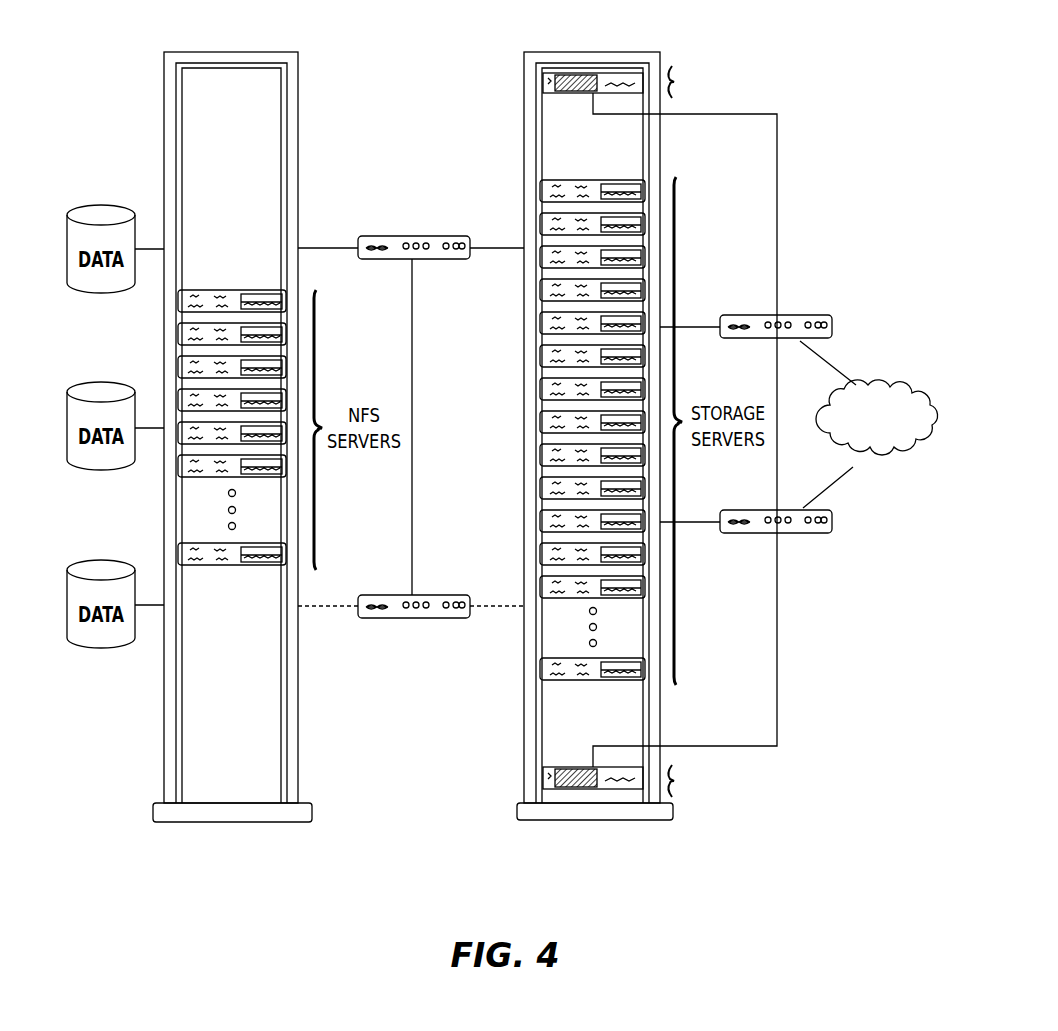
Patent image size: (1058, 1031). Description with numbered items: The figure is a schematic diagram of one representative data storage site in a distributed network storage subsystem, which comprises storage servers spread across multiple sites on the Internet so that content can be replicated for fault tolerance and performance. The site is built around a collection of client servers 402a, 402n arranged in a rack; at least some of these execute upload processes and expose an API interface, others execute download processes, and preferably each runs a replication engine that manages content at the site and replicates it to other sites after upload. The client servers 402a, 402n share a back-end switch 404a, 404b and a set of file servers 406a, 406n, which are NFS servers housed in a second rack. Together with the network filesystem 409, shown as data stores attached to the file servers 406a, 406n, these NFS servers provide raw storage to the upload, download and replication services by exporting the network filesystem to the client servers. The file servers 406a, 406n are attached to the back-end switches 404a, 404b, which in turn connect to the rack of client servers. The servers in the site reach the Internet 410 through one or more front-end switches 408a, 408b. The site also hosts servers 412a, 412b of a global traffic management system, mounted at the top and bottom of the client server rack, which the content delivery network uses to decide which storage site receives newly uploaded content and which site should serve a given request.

The client server 402a is at (589, 177).
The client server 402n is at (592, 683).
The back-end switch 404a is at (413, 234).
The back-end switch 404b is at (412, 620).
The file server 406a is at (232, 287).
The file server 406n is at (233, 567).
The front-end switch 408a is at (808, 312).
The front-end switch 408b is at (808, 536).
The network filesystem 409 is at (92, 212).
The Internet 410 is at (878, 383).
The global traffic management server 412a is at (650, 57).
The global traffic management server 412b is at (644, 818).